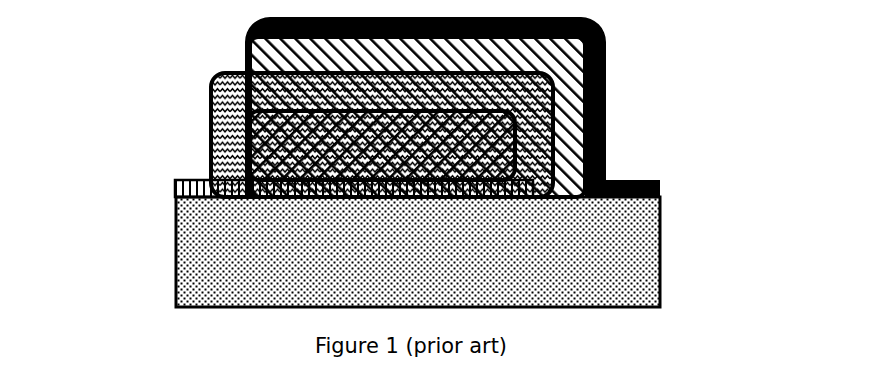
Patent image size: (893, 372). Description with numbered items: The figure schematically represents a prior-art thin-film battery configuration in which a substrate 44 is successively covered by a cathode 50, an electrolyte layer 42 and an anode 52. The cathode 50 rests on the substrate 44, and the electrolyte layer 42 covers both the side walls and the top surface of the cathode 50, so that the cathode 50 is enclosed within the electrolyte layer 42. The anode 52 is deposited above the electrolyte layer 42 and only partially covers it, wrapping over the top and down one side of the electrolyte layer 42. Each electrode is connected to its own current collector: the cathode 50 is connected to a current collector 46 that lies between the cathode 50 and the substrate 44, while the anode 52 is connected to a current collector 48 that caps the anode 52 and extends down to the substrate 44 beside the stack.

The electrolyte layer 42 is at (242, 93).
The substrate 44 is at (573, 257).
The current collector 46 is at (203, 189).
The current collector 48 is at (607, 68).
The cathode 50 is at (330, 142).
The anode 52 is at (290, 62).